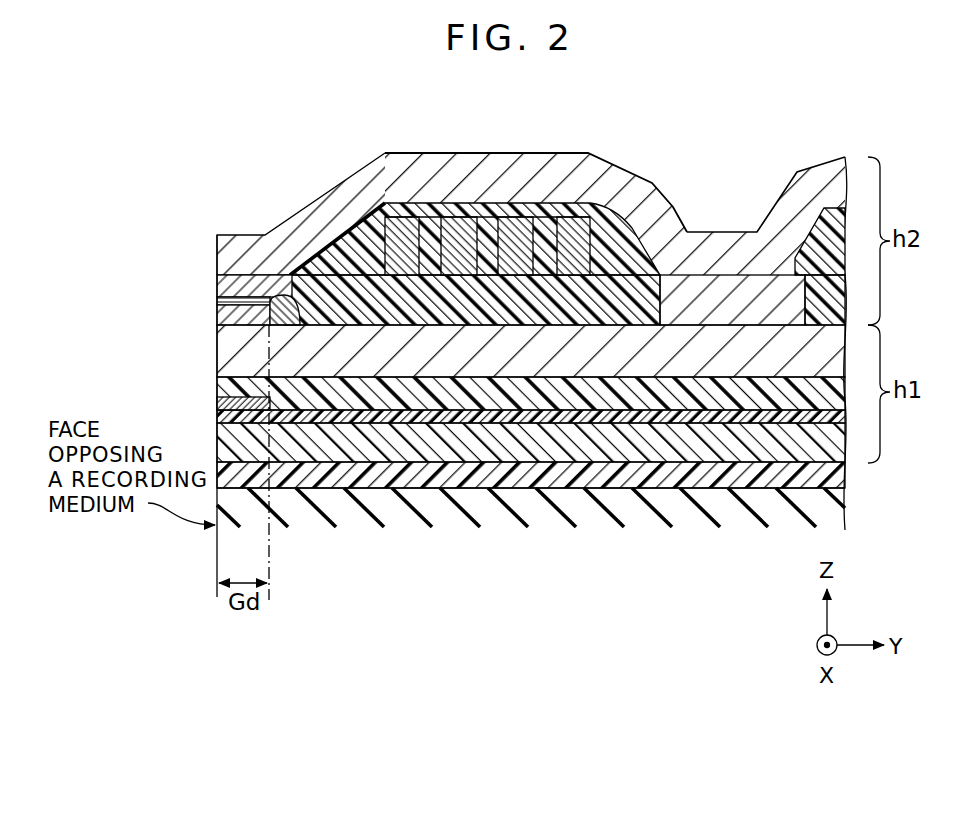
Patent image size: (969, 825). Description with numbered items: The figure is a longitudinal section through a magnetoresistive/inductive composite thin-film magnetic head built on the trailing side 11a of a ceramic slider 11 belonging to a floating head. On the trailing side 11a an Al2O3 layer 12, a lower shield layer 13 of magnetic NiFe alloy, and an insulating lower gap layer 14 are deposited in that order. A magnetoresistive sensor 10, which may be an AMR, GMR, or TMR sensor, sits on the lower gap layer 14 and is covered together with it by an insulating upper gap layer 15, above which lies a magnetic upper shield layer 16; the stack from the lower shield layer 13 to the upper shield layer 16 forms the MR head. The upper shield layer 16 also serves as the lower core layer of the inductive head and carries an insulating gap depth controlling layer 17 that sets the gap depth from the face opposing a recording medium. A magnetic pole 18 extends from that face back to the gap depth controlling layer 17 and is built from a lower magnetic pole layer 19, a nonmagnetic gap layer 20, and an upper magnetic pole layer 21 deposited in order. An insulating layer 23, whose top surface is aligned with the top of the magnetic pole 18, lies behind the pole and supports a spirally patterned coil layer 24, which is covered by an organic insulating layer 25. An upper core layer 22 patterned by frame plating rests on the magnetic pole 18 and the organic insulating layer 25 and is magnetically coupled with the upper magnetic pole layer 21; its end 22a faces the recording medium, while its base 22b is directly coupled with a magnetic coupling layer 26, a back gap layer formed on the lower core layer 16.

The magnetoresistive sensor 10 is at (222, 405).
The ceramic slider 11 is at (727, 505).
The trailing side 11a is at (657, 480).
The Al2O3 layer 12 is at (605, 470).
The lower shield layer 13 is at (548, 470).
The lower gap layer 14 is at (495, 418).
The upper gap layer 15 is at (430, 402).
The upper shield layer 16 is at (357, 352).
The gap depth controlling layer 17 is at (300, 328).
The magnetic pole 18 is at (133, 243).
The lower magnetic pole layer 19 is at (217, 315).
The nonmagnetic gap layer 20 is at (217, 303).
The upper magnetic pole layer 21 is at (217, 287).
The upper core layer 22 is at (532, 186).
The end of the upper core layer 22a is at (245, 258).
The base of the upper core layer 22b is at (730, 248).
The insulating layer 23 is at (618, 295).
The coil layer 24 is at (500, 212).
The organic insulating layer 25 is at (347, 258).
The coupling layer 26 is at (770, 310).